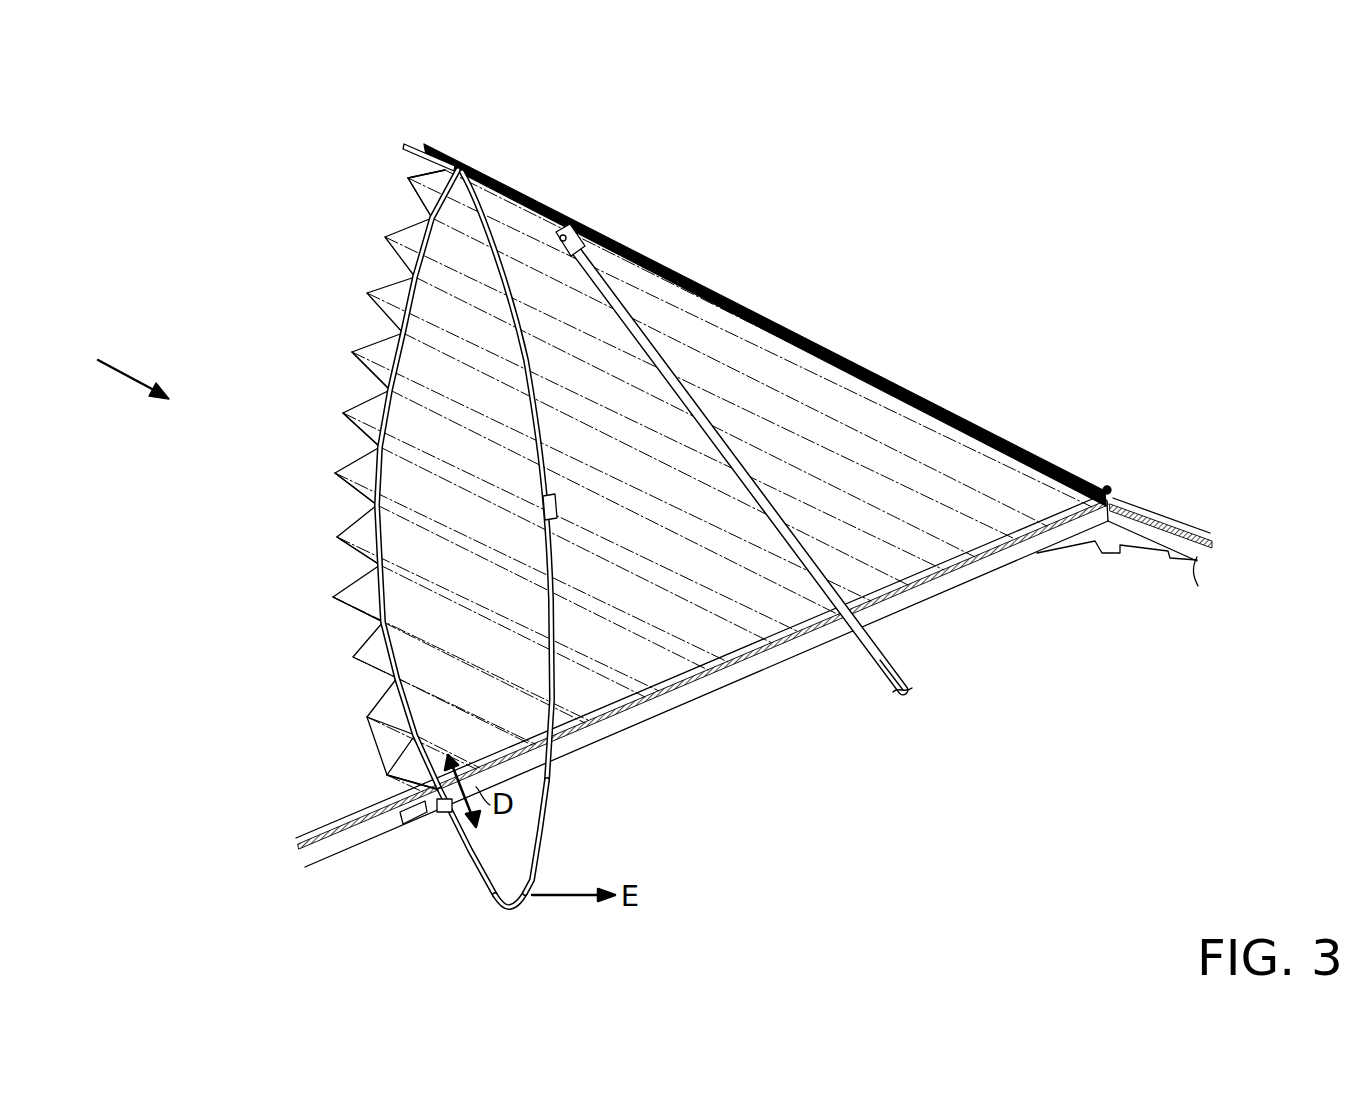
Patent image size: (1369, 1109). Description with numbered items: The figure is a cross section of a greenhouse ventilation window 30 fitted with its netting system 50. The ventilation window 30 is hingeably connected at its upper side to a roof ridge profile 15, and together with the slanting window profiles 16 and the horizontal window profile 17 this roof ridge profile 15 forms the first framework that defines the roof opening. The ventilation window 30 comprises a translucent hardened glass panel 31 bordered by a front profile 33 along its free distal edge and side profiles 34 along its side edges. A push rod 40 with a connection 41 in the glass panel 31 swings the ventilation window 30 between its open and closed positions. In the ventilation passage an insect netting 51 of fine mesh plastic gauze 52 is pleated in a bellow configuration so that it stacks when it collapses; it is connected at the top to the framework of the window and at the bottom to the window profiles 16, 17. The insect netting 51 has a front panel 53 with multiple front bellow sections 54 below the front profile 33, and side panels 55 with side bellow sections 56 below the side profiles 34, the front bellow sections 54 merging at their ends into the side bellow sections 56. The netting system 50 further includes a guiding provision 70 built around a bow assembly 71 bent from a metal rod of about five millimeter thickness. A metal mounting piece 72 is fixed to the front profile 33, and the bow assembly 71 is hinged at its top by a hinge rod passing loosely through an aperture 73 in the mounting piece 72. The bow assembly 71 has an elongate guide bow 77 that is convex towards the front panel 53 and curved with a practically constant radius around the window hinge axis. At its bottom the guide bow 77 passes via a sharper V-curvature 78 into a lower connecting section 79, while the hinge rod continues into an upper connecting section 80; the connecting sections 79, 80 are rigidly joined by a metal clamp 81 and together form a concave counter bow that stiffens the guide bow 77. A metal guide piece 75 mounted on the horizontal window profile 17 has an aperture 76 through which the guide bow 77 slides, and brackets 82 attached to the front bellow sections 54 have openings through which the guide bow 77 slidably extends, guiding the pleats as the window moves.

The roof ridge profile 15 is at (1110, 546).
The slanting window profile 16 is at (983, 565).
The horizontal window profile 17 is at (420, 826).
The ventilation window 30 is at (742, 300).
The glass panel 31 is at (940, 455).
The front profile 33 is at (430, 147).
The side profile 34 is at (855, 400).
The push rod 40 is at (865, 655).
The connection 41 is at (582, 228).
The netting system 50 is at (113, 362).
The insect netting 51 is at (365, 292).
The fine mesh plastic gauze 52 is at (719, 637).
The front panel 53 is at (352, 352).
The front bellow section 54 is at (355, 657).
The side panel 55 is at (790, 365).
The side bellow section 56 is at (985, 492).
The guiding provision 70 is at (485, 230).
The bow assembly 71 is at (500, 257).
The mounting piece 72 is at (418, 175).
The aperture 73 is at (440, 180).
The guide piece 75 is at (442, 814).
The aperture 76 is at (452, 813).
The guide bow 77 is at (343, 413).
The V-curvature 78 is at (513, 908).
The lower connecting section 79 is at (545, 815).
The upper connecting section 80 is at (525, 352).
The metal clamp 81 is at (558, 507).
The bracket 82 is at (375, 504).